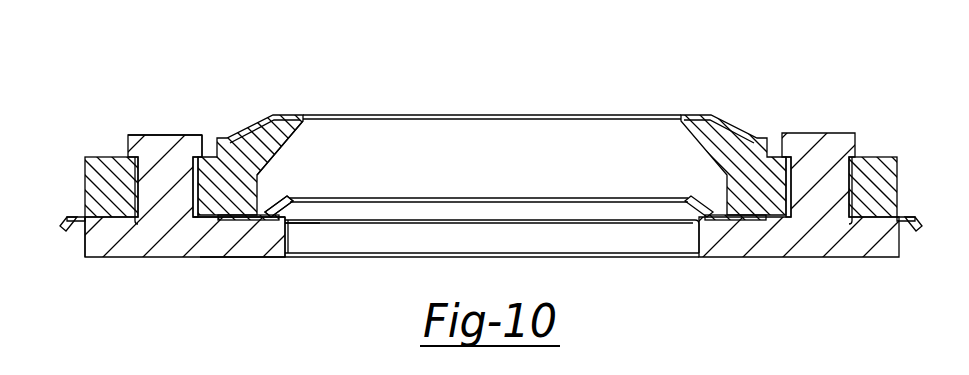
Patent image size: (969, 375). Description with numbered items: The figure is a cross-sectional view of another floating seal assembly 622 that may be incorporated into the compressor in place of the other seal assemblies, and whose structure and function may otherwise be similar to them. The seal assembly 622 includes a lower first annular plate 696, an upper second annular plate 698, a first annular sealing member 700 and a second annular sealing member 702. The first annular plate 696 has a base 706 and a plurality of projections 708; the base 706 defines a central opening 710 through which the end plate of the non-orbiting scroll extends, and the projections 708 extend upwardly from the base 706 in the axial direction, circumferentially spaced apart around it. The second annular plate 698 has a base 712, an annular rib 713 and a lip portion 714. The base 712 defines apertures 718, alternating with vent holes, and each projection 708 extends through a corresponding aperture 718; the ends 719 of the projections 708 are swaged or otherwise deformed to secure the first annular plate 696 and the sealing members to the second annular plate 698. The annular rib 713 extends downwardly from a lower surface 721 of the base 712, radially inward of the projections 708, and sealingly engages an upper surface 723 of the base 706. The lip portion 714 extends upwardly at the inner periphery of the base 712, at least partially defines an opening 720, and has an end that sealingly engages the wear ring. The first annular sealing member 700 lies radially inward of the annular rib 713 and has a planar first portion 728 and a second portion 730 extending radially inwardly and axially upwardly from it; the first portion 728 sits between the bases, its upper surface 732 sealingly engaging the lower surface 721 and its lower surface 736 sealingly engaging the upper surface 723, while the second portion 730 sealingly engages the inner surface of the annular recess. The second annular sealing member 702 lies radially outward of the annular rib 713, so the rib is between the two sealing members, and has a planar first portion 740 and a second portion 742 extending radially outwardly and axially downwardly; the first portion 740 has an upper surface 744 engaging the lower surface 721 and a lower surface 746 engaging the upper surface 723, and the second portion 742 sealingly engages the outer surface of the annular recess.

The seal assembly 622 is at (790, 70).
The first annular plate 696 is at (815, 288).
The second annular plate 698 is at (105, 147).
The first annular sealing member 700 is at (684, 213).
The second annular sealing member 702 is at (912, 208).
The base 706 is at (233, 243).
The projections 708 is at (195, 183).
The central opening 710 is at (298, 238).
The base 712 is at (103, 185).
The annular rib 713 is at (215, 215).
The lip portion 714 is at (700, 122).
The apertures 718 is at (140, 165).
The ends 719 is at (185, 140).
The opening 720 is at (305, 116).
The lower surface 721 is at (197, 228).
The upper surface 723 is at (218, 215).
The first portion 728 is at (252, 218).
The second portion 730 is at (290, 240).
The upper surface 732 is at (258, 185).
The lower surface 736 is at (270, 225).
The first portion 740 is at (112, 200).
The second portion 742 is at (68, 228).
The upper surface 744 is at (92, 218).
The lower surface 746 is at (100, 225).